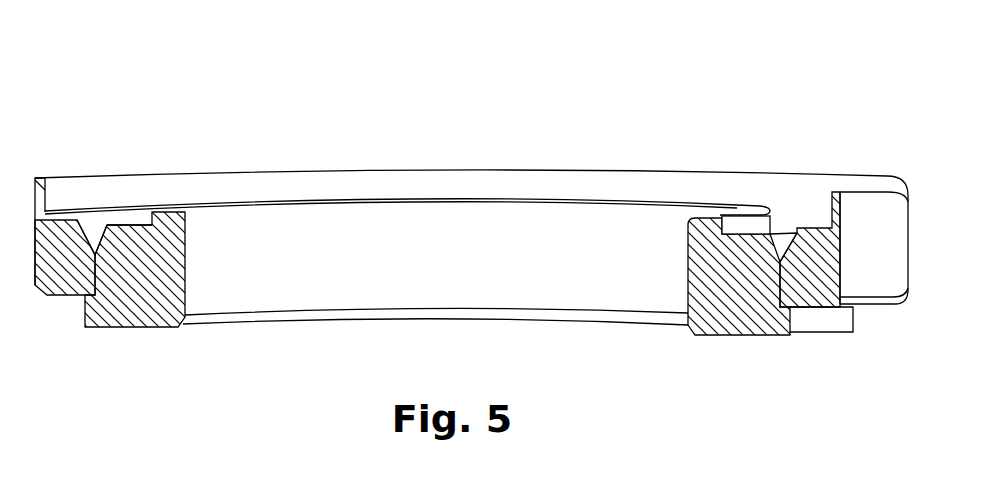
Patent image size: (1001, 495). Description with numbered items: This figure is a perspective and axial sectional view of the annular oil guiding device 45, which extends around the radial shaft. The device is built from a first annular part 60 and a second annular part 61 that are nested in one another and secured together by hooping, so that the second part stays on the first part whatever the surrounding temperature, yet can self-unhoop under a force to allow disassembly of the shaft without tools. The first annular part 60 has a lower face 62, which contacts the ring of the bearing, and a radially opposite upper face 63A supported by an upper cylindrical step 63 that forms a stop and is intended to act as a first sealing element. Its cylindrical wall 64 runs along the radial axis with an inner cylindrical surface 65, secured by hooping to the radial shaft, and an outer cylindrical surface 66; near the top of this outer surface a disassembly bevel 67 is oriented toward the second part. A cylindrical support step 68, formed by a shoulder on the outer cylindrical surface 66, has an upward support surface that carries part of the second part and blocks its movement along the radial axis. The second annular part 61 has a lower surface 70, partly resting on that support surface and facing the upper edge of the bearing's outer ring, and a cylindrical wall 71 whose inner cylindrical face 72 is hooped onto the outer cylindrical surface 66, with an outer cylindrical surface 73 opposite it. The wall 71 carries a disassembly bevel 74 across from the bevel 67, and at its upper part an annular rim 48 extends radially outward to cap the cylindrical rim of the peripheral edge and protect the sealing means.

The annular oil guiding device 45 is at (783, 127).
The annular rim 48 is at (190, 197).
The first annular part 60 is at (150, 335).
The second annular part 61 is at (912, 212).
The lower face 62 is at (731, 338).
The upper cylindrical step 63 is at (703, 232).
The upper face 63A is at (747, 202).
The cylindrical wall 64 is at (112, 295).
The inner cylindrical surface 65 is at (247, 268).
The outer cylindrical surface 66 is at (784, 290).
The disassembly bevel 67 is at (782, 247).
The cylindrical support step 68 is at (828, 318).
The lower surface 70 is at (52, 300).
The cylindrical wall 71 is at (822, 262).
The inner cylindrical face 72 is at (100, 275).
The outer cylindrical surface 73 is at (860, 240).
The disassembly bevel 74 is at (106, 222).